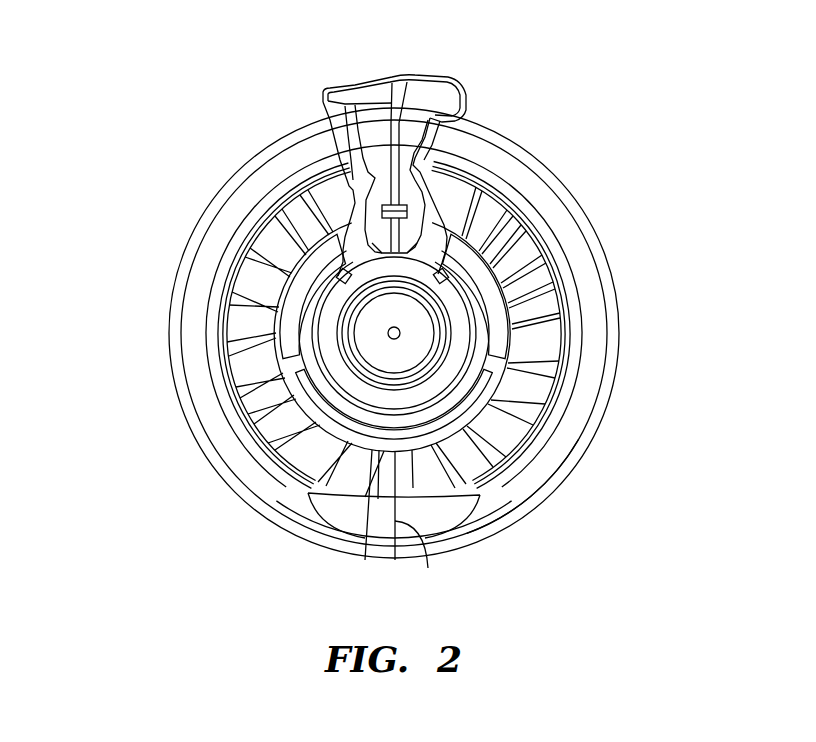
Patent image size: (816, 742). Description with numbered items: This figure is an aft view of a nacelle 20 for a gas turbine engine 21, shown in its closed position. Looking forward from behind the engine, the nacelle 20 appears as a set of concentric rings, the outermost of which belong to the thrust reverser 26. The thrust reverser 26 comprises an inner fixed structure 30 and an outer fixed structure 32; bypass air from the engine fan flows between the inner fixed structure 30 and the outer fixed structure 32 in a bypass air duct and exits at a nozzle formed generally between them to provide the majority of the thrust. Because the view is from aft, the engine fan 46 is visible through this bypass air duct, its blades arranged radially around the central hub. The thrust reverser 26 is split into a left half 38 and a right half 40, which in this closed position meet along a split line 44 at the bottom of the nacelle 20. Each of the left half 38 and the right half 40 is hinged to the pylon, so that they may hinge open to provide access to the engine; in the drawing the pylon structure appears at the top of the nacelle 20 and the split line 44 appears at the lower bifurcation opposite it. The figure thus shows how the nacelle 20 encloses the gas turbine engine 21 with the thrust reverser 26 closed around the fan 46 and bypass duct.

The nacelle 20 is at (546, 87).
The gas turbine engine 21 is at (562, 347).
The thrust reverser 26 is at (188, 355).
The inner fixed structure 30 is at (470, 253).
The outer fixed structure 32 is at (540, 268).
The left half 38 is at (233, 470).
The right half 40 is at (525, 500).
The split line 44 is at (428, 568).
The engine fan 46 is at (540, 400).